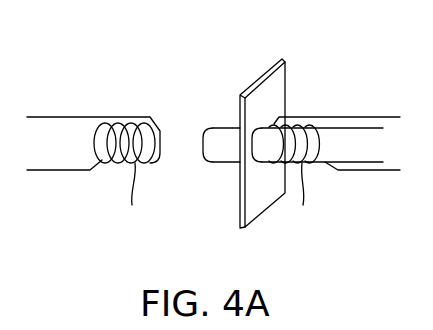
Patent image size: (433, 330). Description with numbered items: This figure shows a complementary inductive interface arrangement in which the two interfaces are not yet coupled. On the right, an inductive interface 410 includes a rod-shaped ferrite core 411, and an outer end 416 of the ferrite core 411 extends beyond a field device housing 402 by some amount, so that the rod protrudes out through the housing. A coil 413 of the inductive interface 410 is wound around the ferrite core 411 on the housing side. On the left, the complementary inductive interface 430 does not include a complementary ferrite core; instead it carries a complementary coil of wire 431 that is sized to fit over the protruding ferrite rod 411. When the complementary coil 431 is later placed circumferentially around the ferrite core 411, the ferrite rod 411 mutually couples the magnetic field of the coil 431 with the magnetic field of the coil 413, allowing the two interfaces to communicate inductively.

The field device housing 402 is at (273, 82).
The inductive interface 410 is at (332, 100).
The rod-shaped ferrite core 411 is at (223, 142).
The coil 413 is at (302, 180).
The outer end 416 is at (203, 143).
The complementary inductive interface 430 is at (113, 102).
The complementary coil of wire 431 is at (124, 181).